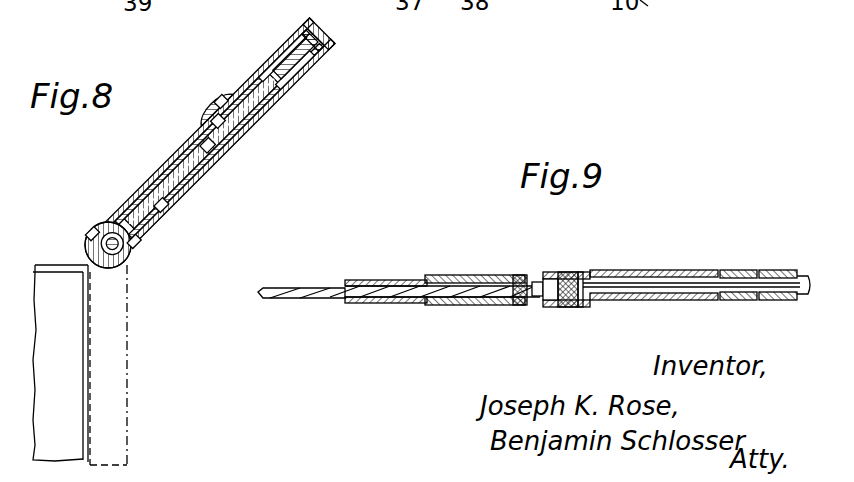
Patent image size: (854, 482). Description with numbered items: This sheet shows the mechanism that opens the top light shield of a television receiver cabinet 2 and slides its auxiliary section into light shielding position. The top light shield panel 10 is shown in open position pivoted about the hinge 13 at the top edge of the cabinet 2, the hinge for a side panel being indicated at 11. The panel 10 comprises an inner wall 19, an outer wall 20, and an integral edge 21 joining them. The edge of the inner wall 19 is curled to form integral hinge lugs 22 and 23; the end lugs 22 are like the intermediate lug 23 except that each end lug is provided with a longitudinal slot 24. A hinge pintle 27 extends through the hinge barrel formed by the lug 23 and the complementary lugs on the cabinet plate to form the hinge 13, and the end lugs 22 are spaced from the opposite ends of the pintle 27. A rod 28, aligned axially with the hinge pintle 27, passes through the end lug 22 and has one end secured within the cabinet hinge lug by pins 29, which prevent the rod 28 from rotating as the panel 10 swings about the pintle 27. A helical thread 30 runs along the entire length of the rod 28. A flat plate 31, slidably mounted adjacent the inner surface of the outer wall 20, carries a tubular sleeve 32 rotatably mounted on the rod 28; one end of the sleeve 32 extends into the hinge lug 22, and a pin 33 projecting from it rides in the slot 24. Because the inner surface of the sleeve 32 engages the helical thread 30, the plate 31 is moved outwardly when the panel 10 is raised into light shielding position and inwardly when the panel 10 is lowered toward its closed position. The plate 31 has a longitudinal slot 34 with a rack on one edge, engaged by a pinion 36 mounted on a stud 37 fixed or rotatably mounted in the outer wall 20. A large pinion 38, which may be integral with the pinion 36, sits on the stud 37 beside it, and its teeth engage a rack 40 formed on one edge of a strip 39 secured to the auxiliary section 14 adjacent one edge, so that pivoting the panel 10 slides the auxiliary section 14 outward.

In FIG. 8, the television receiver cabinet 2 is at (58, 322).
In FIG. 8, the top light shield panel 10 is at (161, 205).
In FIG. 8, the hinge 11 is at (108, 358).
In FIG. 8, the hinge 13 is at (107, 244).
In FIG. 8, the auxiliary section 14 is at (201, 151).
In FIG. 8, the inner wall 19 is at (295, 56).
In FIG. 8, the outer wall 20 is at (219, 133).
In FIG. 8, the integral edge 21 is at (319, 34).
In FIG. 9, the end hinge lug 22 is at (452, 304).
In FIG. 9, the intermediate hinge lug 23 is at (738, 270).
In FIG. 9, the longitudinal slot 24 is at (450, 275).
In FIG. 9, the hinge pintle 27 is at (645, 287).
In FIG. 8, the rod 28 is at (112, 243).
In FIG. 9, the rod 28 is at (313, 294).
In FIG. 9, the pin 29 is at (578, 274).
In FIG. 9, the helical thread 30 is at (283, 288).
In FIG. 8, the flat plate 31 is at (219, 134).
In FIG. 8, the tubular sleeve 32 is at (134, 241).
In FIG. 9, the tubular sleeve 32 is at (375, 280).
In FIG. 8, the pin 33 is at (92, 234).
In FIG. 9, the pin 33 is at (515, 275).
In FIG. 8, the longitudinal slot 34 is at (208, 146).
In FIG. 8, the pinion 36 is at (220, 111).
In FIG. 8, the stud 37 is at (214, 107).
In FIG. 8, the large pinion 38 is at (313, 40).
In FIG. 8, the strip 39 is at (283, 58).
In FIG. 8, the rack 40 is at (295, 70).